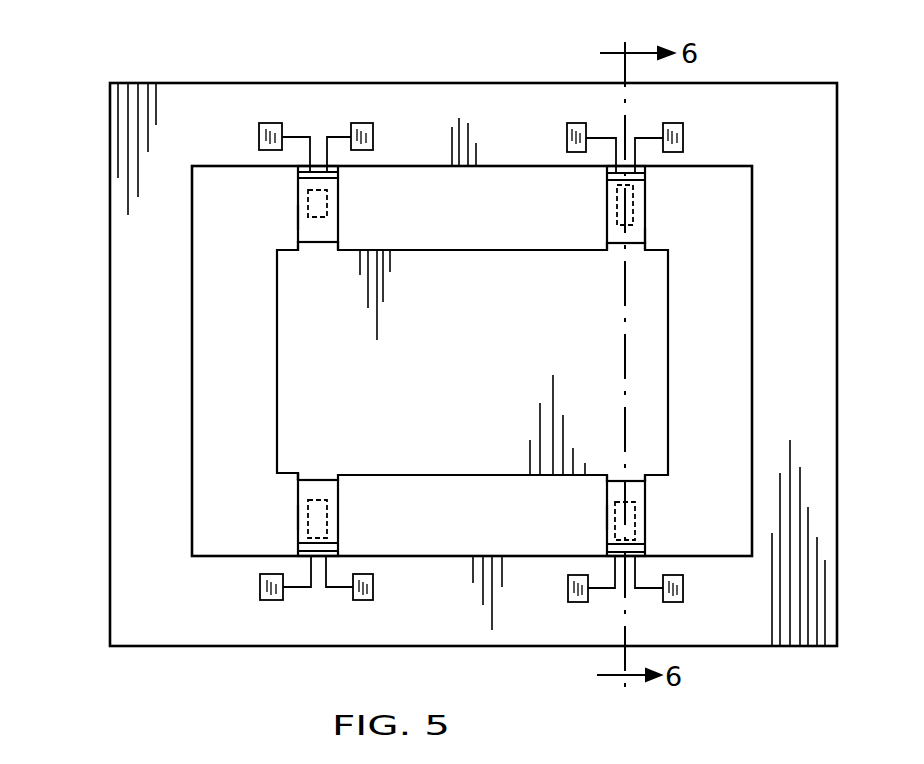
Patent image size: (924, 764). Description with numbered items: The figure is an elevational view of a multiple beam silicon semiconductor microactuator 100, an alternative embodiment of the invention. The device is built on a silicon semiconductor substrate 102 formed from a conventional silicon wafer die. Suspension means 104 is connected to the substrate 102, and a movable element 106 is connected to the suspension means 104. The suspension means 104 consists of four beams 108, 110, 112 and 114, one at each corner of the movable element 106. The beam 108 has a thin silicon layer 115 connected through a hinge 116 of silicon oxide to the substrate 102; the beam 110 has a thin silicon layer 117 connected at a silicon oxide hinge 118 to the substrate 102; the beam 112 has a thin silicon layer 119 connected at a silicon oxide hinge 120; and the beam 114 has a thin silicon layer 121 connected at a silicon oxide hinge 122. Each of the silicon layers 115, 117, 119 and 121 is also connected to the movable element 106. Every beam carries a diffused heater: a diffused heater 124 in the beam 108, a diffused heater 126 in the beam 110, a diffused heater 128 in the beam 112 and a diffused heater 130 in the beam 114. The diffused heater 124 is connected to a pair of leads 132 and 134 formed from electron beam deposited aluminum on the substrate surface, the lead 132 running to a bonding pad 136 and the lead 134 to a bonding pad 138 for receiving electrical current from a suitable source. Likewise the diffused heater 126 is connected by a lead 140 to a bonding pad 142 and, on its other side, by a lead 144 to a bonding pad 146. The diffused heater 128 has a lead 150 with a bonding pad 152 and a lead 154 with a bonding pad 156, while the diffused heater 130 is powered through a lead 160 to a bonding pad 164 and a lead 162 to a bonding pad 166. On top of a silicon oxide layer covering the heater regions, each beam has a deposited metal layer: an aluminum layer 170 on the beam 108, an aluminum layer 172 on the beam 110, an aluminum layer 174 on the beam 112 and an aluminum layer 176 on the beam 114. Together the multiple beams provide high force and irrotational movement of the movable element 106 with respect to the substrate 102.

The semiconductor microactuator 100 is at (296, 70).
The silicon semiconductor substrate 102 is at (124, 101).
The suspension means 104 is at (338, 214).
The movable element 106 is at (668, 378).
The beam 108 is at (298, 218).
The beam 110 is at (645, 241).
The beam 112 is at (298, 516).
The beam 114 is at (607, 518).
The thin silicon layer 115 is at (333, 244).
The hinge 116 is at (336, 166).
The thin silicon layer 117 is at (648, 251).
The silicon oxide hinge 118 is at (647, 167).
The thin silicon layer 119 is at (298, 478).
The silicon oxide hinge 120 is at (338, 556).
The thin silicon layer 121 is at (645, 481).
The silicon oxide hinge 122 is at (645, 556).
The diffused heater 124 is at (298, 196).
The diffused heater 126 is at (645, 196).
The diffused heater 128 is at (338, 501).
The diffused heater 130 is at (650, 506).
The lead 132 is at (308, 126).
The lead 134 is at (326, 132).
The bonding pad 136 is at (259, 137).
The bonding pad 138 is at (373, 137).
The lead 140 is at (611, 127).
The bonding pad 142 is at (567, 137).
The lead 144 is at (645, 127).
The bonding pad 146 is at (683, 138).
The lead 150 is at (303, 590).
The bonding pad 152 is at (260, 590).
The lead 154 is at (333, 592).
The bonding pad 156 is at (373, 588).
The lead 160 is at (607, 592).
The lead 162 is at (637, 596).
The bonding pad 164 is at (568, 590).
The bonding pad 166 is at (683, 590).
The aluminum layer 170 is at (307, 230).
The aluminum layer 172 is at (612, 240).
The aluminum layer 174 is at (298, 488).
The aluminum layer 176 is at (607, 498).